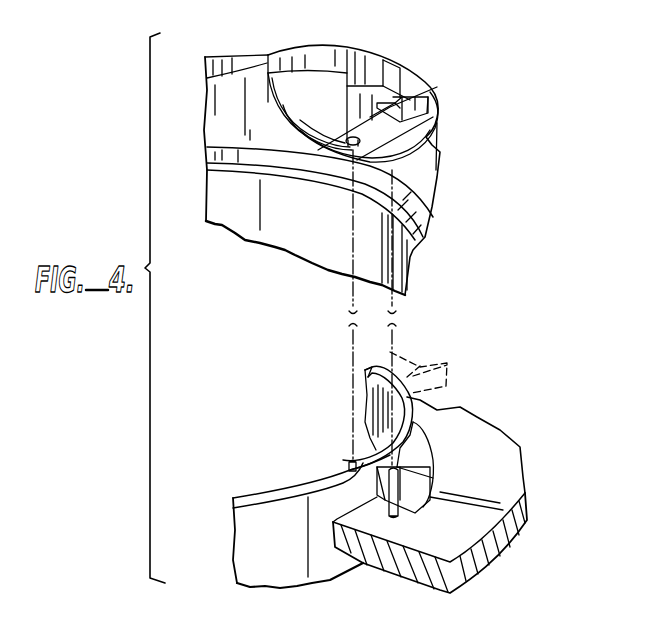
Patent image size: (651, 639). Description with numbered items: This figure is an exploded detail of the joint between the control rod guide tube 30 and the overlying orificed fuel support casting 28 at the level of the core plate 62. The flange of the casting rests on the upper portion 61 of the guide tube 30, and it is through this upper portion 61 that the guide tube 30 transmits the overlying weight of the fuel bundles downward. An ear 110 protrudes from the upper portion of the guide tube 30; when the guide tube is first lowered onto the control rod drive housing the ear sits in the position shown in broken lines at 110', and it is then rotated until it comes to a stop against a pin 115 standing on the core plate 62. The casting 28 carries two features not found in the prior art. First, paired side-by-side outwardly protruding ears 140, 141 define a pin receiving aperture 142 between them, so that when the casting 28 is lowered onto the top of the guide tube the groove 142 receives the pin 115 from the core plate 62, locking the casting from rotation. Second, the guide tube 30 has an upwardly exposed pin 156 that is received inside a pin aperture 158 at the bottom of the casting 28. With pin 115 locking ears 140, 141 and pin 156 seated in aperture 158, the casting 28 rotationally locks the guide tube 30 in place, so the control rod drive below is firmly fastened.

The orificed fuel support casting 28 is at (445, 180).
The guide tube 30 is at (258, 546).
The upper portion of the guide tube 61 is at (272, 497).
The core plate 62 is at (503, 503).
The ear 110 is at (443, 451).
The ear in initial rotational position 110' is at (438, 368).
The pin 115 is at (398, 523).
The outwardly protruding ear 140 is at (410, 108).
The outwardly protruding ear 141 is at (393, 97).
The pin receiving aperture 142 is at (390, 150).
The pin 156 is at (348, 461).
The pin aperture 158 is at (425, 160).